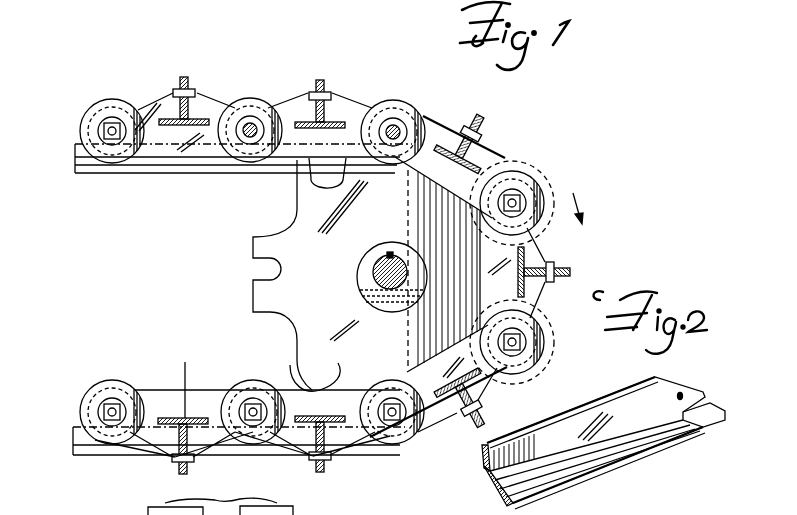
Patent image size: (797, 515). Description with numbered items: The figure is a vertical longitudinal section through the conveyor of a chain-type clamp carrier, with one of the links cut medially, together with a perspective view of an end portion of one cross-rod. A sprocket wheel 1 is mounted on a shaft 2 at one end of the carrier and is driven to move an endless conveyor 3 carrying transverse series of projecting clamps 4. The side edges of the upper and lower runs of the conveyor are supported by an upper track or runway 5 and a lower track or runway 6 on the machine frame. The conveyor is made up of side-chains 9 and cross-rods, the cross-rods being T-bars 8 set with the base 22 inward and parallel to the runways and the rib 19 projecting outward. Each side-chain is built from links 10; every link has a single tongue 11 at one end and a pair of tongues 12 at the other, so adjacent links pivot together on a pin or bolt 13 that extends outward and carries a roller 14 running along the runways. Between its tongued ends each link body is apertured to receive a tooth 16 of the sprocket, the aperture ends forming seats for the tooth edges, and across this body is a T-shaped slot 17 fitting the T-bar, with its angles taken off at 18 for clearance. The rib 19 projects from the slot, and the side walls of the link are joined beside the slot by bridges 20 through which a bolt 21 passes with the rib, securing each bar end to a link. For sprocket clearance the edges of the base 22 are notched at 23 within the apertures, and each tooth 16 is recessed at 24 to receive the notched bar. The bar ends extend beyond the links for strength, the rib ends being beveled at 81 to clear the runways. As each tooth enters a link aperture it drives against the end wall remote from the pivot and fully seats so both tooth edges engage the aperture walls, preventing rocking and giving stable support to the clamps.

In FIG. 1, the sprocket wheel 1 is at (447, 514).
In FIG. 1, the shaft 2 is at (385, 258).
In FIG. 1, the endless conveyor 3 is at (88, 106).
In FIG. 1, the projecting clamps 4 is at (38, 503).
In FIG. 1, the upper track or runway 5 is at (100, 176).
In FIG. 1, the lower track or runway 6 is at (77, 445).
In FIG. 1, the T-bar cross-rod 8 is at (186, 93).
In FIG. 2, the T-bar cross-rod 8 is at (542, 425).
In FIG. 1, the side-chain 9 is at (250, 110).
In FIG. 1, the link 10 is at (170, 168).
In FIG. 1, the tongue 11 is at (257, 393).
In FIG. 1, the pair of tongues 12 is at (80, 457).
In FIG. 1, the pin or bolt 13 is at (105, 128).
In FIG. 1, the roller 14 is at (110, 98).
In FIG. 1, the sprocket tooth 16 is at (300, 193).
In FIG. 1, the T-shaped slot 17 is at (378, 305).
In FIG. 1, the clearance cut-offs 18 is at (523, 252).
In FIG. 1, the rib 19 is at (321, 78).
In FIG. 2, the rib 19 is at (583, 418).
In FIG. 1, the bridge 20 is at (467, 133).
In FIG. 1, the bolt 21 is at (198, 95).
In FIG. 1, the base 22 is at (186, 412).
In FIG. 2, the base 22 is at (597, 460).
In FIG. 1, the notch 23 is at (296, 120).
In FIG. 2, the notch 23 is at (697, 428).
In FIG. 1, the recess 24 is at (490, 263).
In FIG. 2, the bevel 81 is at (673, 377).